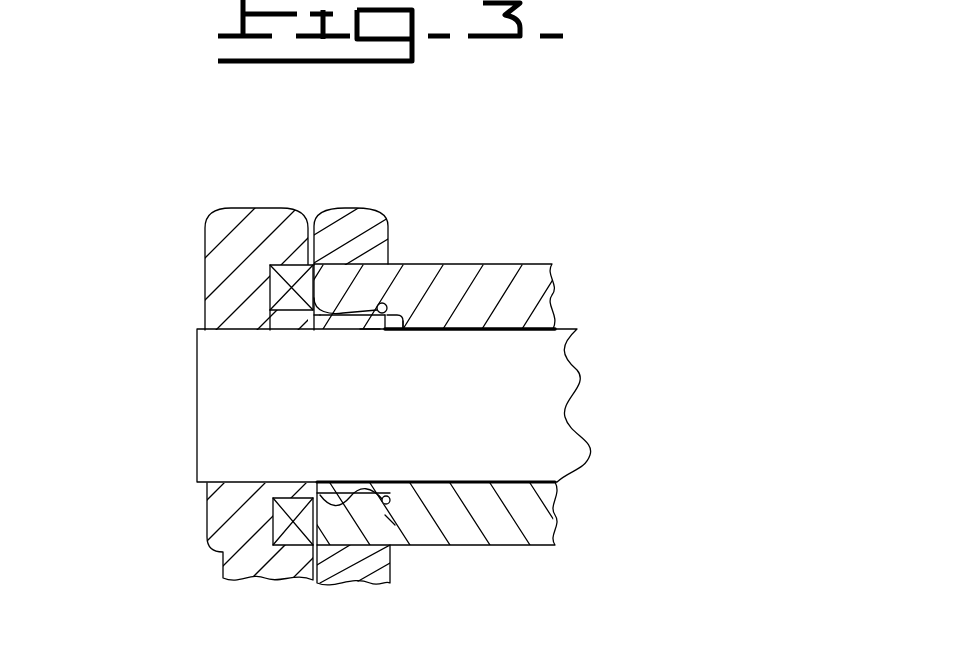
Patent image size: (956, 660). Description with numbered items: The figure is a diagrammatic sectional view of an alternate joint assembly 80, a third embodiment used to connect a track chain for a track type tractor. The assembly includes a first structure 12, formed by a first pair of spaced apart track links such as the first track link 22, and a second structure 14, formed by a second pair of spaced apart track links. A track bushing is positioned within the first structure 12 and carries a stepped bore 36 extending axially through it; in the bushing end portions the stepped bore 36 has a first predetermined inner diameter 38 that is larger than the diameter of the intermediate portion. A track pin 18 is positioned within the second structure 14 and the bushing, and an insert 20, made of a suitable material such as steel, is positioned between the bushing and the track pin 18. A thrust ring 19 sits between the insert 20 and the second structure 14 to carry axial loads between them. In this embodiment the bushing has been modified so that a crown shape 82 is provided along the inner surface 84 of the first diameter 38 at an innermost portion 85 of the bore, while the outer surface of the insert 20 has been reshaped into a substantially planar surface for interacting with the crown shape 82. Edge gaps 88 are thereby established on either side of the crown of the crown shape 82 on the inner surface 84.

The first structure 12 is at (347, 184).
The second structure 14 is at (211, 202).
The track pin 18 is at (167, 391).
The thrust ring 19 is at (287, 326).
The insert 20 is at (369, 333).
The first track link 22 is at (389, 250).
The stepped bore 36 is at (490, 333).
The first predetermined inner diameter 38 is at (385, 302).
The alternate joint assembly 80 is at (559, 182).
The crown shape 82 is at (348, 311).
The inner surface 84 is at (352, 495).
The innermost portion 85 is at (393, 520).
The edge gaps 88 is at (322, 326).